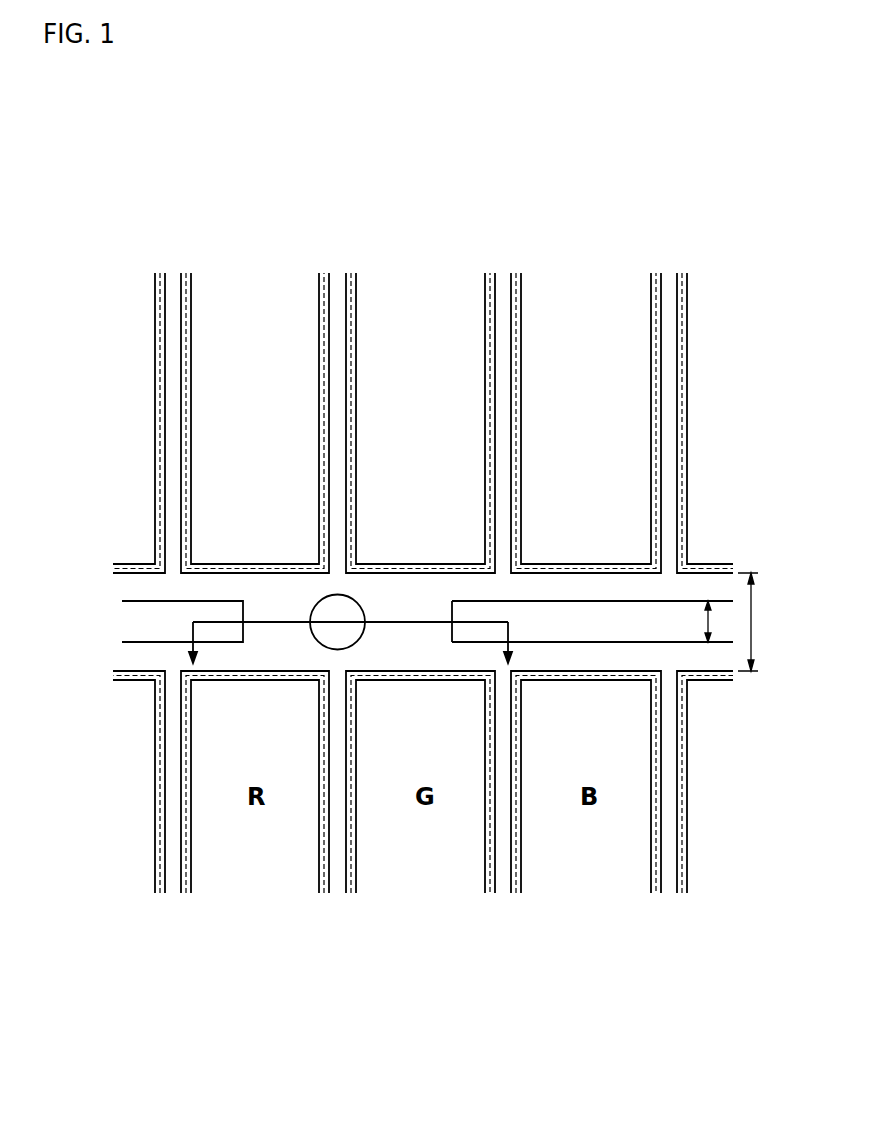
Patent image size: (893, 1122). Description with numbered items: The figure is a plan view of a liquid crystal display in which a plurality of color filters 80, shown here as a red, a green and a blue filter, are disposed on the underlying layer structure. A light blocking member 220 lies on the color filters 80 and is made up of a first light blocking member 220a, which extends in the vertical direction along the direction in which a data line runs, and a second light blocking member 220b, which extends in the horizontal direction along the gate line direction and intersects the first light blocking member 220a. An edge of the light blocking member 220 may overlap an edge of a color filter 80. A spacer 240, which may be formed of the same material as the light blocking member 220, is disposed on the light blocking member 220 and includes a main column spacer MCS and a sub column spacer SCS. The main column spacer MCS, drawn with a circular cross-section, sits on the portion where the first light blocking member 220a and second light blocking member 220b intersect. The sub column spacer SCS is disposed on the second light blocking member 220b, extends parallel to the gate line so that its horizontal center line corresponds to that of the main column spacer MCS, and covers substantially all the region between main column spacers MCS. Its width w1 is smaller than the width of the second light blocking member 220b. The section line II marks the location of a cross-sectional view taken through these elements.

The color filters 80 is at (415, 316).
The light blocking member 220 is at (91, 436).
The first light blocking member 220a is at (170, 545).
The second light blocking member 220b is at (145, 588).
The spacer 240 is at (427, 821).
The main column spacer MCS is at (325, 636).
The sub column spacer SCS is at (596, 630).
The width of the sub column spacer w1 is at (743, 622).
The section line II is at (352, 648).